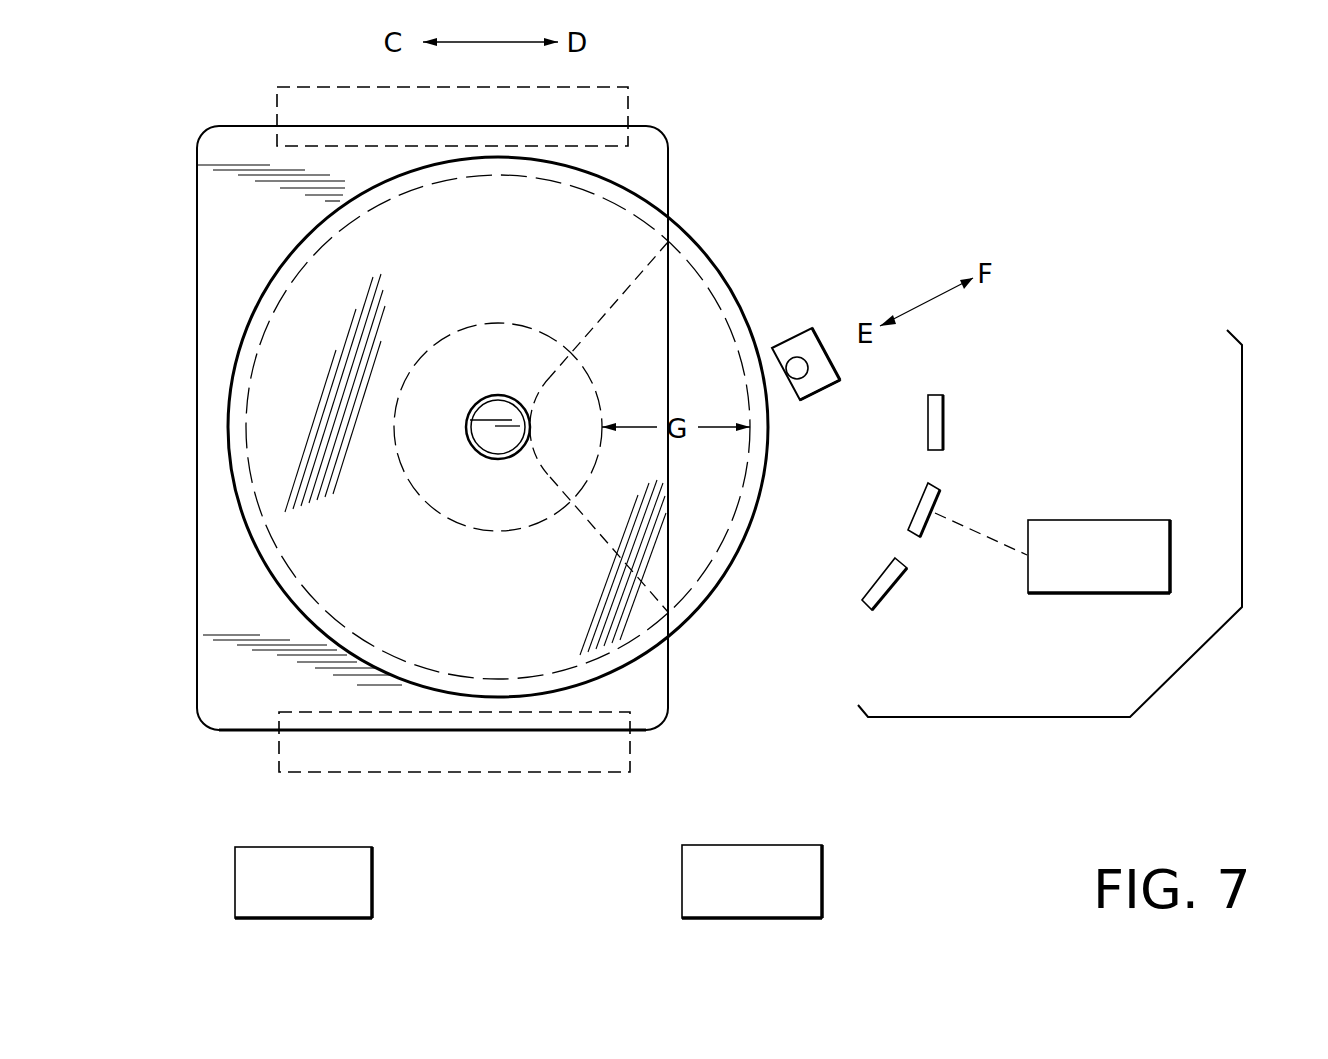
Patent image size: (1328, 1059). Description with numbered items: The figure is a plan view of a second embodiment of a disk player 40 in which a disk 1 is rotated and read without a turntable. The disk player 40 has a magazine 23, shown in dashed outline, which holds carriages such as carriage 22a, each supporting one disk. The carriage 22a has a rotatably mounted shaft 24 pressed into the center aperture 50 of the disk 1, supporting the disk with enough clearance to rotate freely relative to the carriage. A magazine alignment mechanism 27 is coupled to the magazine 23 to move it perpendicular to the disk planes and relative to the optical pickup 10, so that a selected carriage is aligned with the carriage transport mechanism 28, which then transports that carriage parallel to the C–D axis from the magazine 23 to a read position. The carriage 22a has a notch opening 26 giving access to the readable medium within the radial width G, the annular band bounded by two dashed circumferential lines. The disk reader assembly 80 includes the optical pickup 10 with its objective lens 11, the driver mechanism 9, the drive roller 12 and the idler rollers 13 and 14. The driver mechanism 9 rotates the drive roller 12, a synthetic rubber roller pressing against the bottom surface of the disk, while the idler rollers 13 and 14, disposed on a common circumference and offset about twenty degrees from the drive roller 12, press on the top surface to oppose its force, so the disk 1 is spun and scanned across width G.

The disk 1 is at (273, 403).
The driver mechanism 9 is at (1099, 556).
The optical pickup 10 is at (810, 398).
The objective lens 11 is at (788, 357).
The drive roller 12 is at (937, 503).
The idler roller 13 is at (895, 585).
The idler roller 14 is at (943, 407).
The carriage 22a is at (210, 190).
The magazine 23 is at (280, 86).
The shaft 24 is at (469, 416).
The notch opening 26 is at (655, 278).
The magazine alignment mechanism 27 is at (340, 773).
The carriage transport mechanism 28 is at (660, 727).
The disk player 40 is at (857, 740).
The center aperture 50 is at (487, 462).
The disk reader assembly 80 is at (1183, 667).